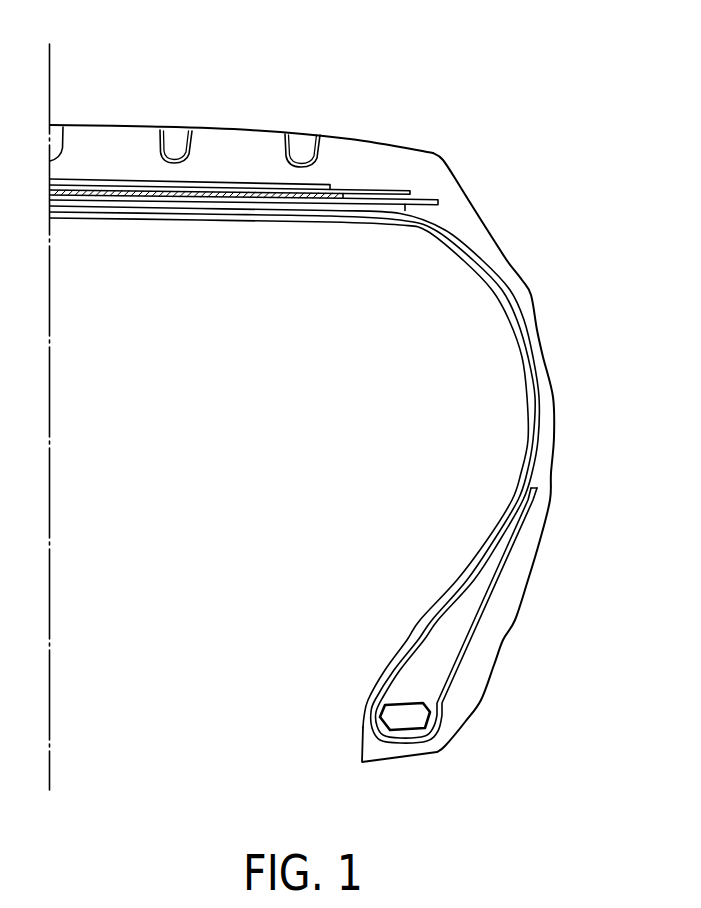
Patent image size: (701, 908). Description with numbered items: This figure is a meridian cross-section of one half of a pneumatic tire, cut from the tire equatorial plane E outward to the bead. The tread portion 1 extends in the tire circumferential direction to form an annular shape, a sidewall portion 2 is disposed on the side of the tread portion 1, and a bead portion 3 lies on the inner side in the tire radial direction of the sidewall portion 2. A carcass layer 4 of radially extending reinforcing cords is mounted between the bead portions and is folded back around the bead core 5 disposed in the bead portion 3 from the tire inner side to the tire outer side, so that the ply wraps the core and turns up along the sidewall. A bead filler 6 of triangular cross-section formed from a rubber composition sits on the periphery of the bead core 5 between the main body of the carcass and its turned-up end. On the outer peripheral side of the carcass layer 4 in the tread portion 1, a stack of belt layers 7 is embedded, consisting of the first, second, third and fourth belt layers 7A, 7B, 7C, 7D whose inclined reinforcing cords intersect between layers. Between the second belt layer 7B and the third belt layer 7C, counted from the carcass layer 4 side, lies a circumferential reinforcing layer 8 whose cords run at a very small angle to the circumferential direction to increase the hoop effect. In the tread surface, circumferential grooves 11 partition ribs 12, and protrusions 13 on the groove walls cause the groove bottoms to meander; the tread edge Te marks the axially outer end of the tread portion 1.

The tread portion 1 is at (253, 130).
The sidewall portion 2 is at (555, 417).
The bead portion 3 is at (465, 727).
The carcass layer 4 is at (511, 297).
The bead core 5 is at (390, 715).
The bead filler 6 is at (418, 675).
The belt layer 7 is at (287, 197).
The first belt layer 7A is at (360, 209).
The second belt layer 7B is at (428, 216).
The third belt layer 7C is at (402, 191).
The fourth belt layer 7D is at (328, 184).
The circumferential reinforcing layer 8 is at (208, 197).
The circumferential groove 11 is at (61, 126).
The rib 12 is at (103, 140).
The protrusion 13 is at (162, 134).
The tread edge Te is at (434, 155).
The tire equatorial plane E is at (44, 400).